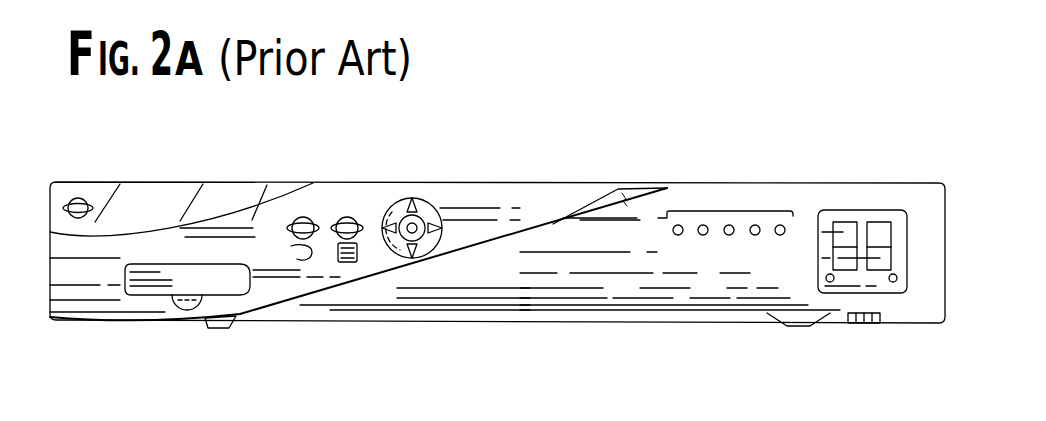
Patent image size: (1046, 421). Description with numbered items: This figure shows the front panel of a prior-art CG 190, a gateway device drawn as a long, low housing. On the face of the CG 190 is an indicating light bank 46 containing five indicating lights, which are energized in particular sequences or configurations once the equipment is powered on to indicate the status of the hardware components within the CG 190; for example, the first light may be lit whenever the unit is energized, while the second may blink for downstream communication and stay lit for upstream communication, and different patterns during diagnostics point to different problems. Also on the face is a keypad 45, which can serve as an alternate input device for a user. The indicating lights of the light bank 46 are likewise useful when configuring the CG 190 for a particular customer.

The CG 190 is at (173, 168).
The keypad 45 is at (421, 213).
The indicating light bank 46 is at (731, 211).